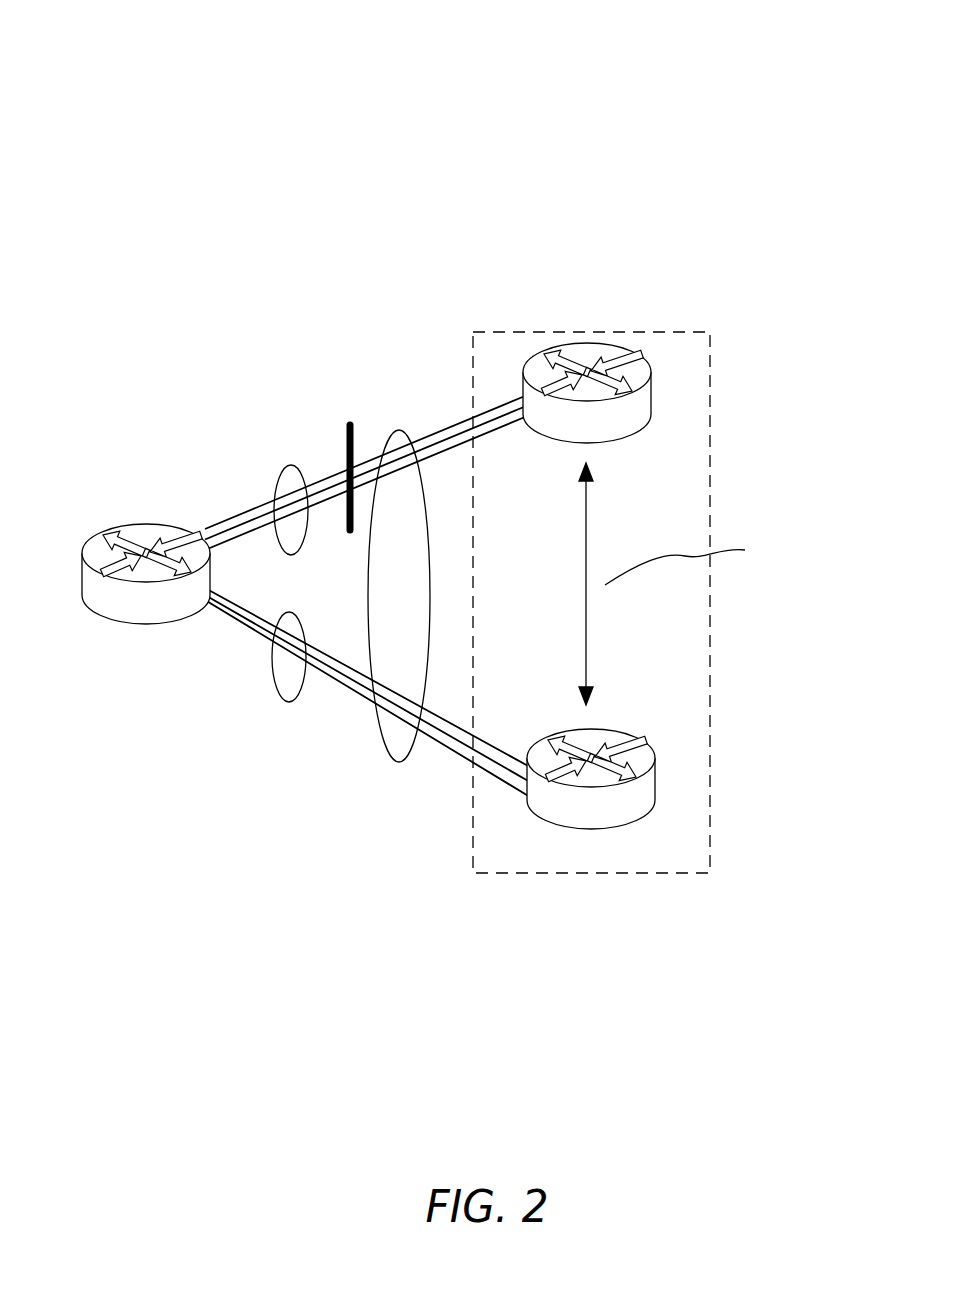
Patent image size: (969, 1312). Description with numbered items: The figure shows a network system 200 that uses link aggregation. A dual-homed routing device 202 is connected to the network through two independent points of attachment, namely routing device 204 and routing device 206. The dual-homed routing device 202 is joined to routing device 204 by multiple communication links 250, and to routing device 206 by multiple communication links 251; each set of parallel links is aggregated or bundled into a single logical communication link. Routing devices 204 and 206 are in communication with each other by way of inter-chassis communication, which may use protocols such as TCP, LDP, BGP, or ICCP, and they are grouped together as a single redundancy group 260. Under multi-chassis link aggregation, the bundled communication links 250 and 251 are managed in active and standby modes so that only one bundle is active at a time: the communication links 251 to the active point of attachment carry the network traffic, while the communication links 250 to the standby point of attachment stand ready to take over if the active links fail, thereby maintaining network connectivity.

The network system 200 is at (745, 78).
The dual-homed routing device 202 is at (138, 524).
The routing device 204 is at (587, 344).
The routing device 206 is at (600, 729).
The communication links 250 is at (289, 465).
The communication links 251 is at (289, 702).
The redundancy group 260 is at (710, 373).